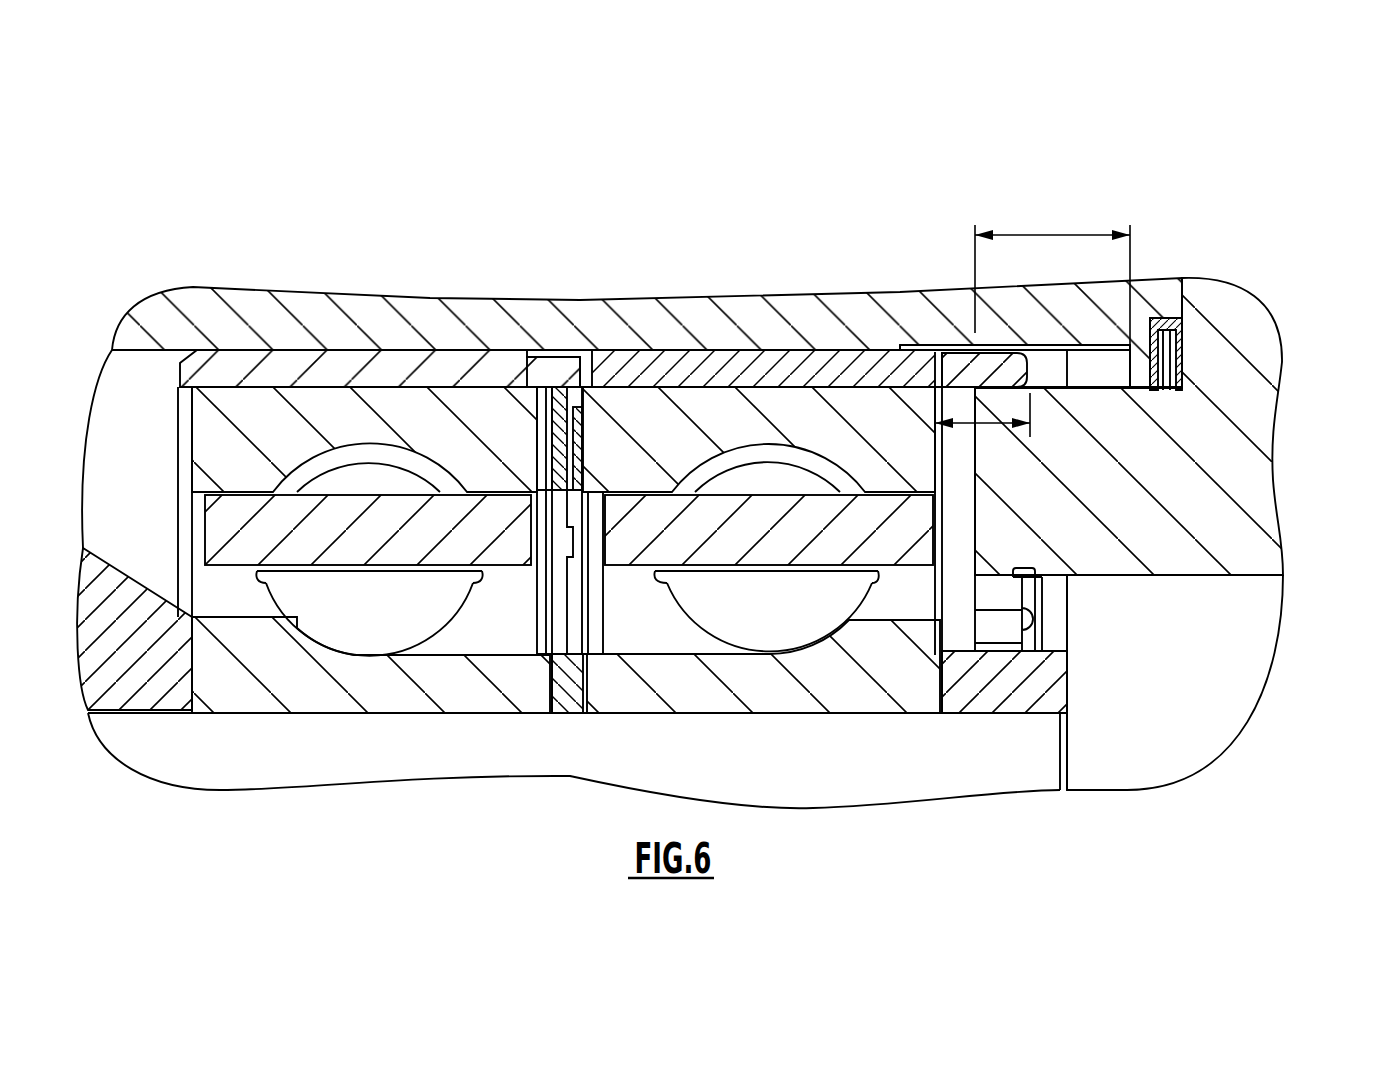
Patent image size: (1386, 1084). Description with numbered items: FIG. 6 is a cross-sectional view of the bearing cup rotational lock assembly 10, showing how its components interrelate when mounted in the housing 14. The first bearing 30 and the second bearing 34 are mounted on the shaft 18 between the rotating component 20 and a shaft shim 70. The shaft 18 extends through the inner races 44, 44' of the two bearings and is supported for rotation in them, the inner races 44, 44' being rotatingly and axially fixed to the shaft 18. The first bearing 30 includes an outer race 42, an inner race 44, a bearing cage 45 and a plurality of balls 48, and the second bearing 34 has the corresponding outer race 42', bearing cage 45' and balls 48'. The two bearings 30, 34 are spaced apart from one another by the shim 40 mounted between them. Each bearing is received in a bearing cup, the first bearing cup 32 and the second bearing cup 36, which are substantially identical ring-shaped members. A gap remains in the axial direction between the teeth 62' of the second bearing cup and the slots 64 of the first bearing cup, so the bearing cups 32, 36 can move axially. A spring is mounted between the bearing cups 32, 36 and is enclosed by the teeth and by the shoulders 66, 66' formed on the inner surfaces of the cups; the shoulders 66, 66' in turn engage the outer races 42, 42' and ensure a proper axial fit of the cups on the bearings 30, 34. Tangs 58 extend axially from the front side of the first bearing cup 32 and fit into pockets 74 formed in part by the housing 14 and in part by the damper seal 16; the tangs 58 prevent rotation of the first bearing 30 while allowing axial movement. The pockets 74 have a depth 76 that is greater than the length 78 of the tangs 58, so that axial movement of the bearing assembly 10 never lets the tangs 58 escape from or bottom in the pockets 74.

The bearing cup rotational lock assembly 10 is at (203, 195).
The housing 14 is at (730, 332).
The damper seal 16 is at (1262, 367).
The shaft 18 is at (1200, 740).
The rotating component 20 is at (105, 683).
The first bearing 30 is at (908, 716).
The first bearing cup 32 is at (800, 350).
The second bearing 34 is at (337, 716).
The second bearing cup 36 is at (336, 350).
The shim 40 is at (567, 715).
The outer race 42 is at (759, 378).
The outer race 42' is at (371, 370).
The inner race 44 is at (763, 697).
The inner race 44' is at (366, 695).
The bearing cage 45 is at (814, 530).
The bearing cage 45' is at (314, 530).
The balls 48 is at (751, 611).
The balls 48' is at (387, 613).
The tangs 58 is at (973, 367).
The teeth 62' is at (531, 286).
The slots 64 is at (587, 367).
The shoulder 66 is at (630, 373).
The shoulder 66' is at (503, 340).
The shaft shim 70 is at (992, 693).
The pockets 74 is at (1047, 372).
The pocket depth 76 is at (1130, 235).
The tang length 78 is at (1030, 428).